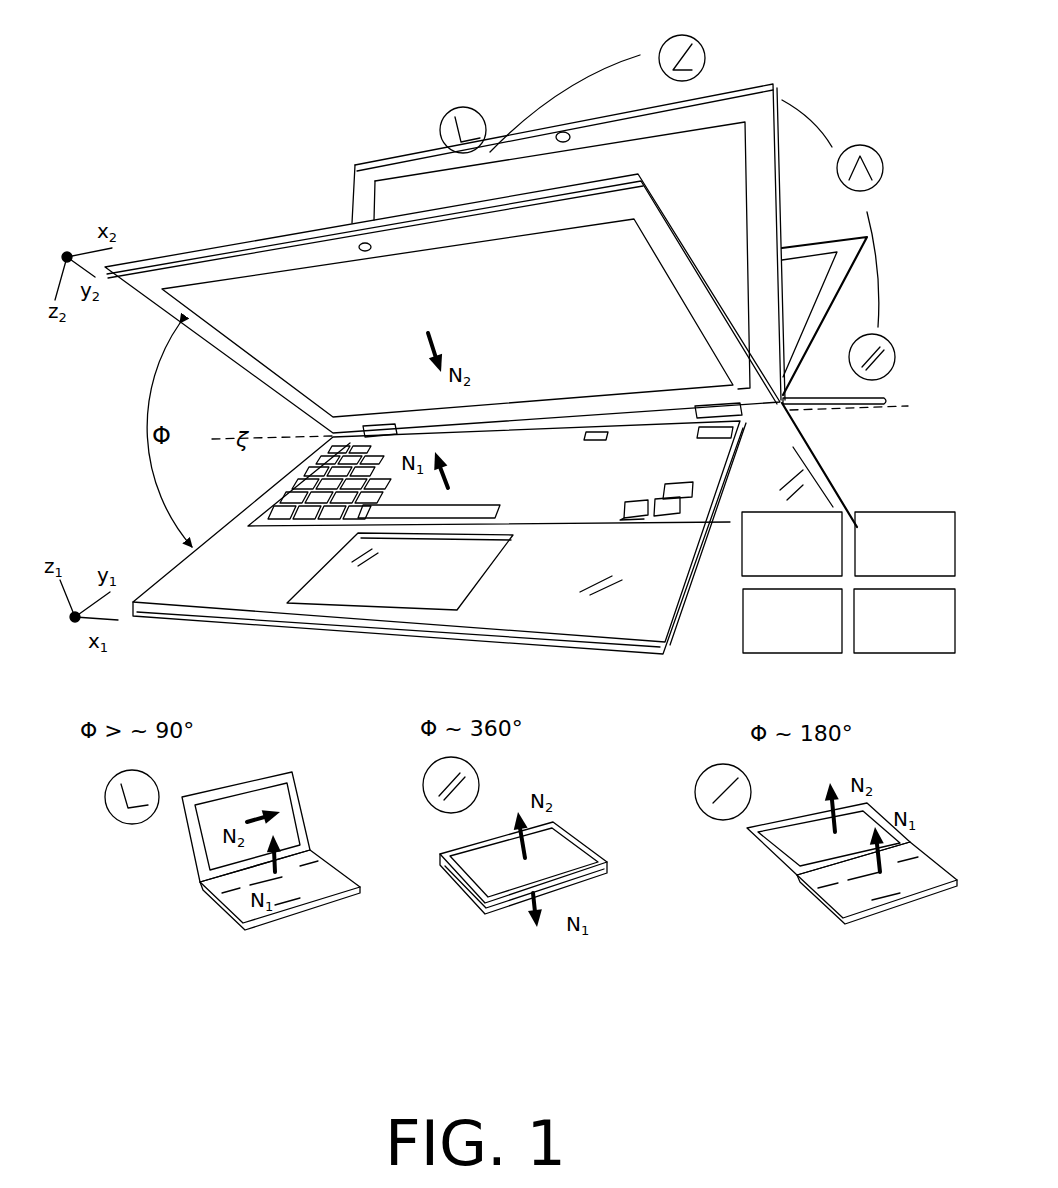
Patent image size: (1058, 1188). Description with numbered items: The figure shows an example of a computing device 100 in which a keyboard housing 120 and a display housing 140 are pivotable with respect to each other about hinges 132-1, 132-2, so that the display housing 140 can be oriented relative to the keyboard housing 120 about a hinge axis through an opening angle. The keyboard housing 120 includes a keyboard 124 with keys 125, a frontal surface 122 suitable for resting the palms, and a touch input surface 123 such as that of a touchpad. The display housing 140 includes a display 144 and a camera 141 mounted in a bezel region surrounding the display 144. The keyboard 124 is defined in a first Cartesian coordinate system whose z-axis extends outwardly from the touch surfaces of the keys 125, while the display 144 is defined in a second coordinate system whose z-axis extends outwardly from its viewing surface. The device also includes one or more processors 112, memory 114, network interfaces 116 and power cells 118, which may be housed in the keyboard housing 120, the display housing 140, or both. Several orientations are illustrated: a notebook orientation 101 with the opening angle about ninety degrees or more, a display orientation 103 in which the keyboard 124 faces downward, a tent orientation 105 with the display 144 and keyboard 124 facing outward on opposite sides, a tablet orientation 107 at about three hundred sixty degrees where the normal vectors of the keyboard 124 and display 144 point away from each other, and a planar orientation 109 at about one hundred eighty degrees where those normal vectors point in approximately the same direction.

The computing device 100 is at (276, 128).
The orientation 101 is at (441, 112).
The orientation 103 is at (661, 42).
The orientation 105 is at (880, 150).
The orientation 107 is at (884, 344).
The orientation 109 is at (698, 775).
The processors 112 is at (816, 567).
The memory 114 is at (926, 567).
The network interfaces 116 is at (816, 644).
The power cells 118 is at (926, 644).
The keyboard housing 120 is at (200, 622).
The frontal surface 122 is at (570, 580).
The touch input surface 123 is at (441, 584).
The keyboard 124 is at (650, 487).
The keys 125 is at (634, 520).
The hinge 132-1 is at (382, 424).
The hinge 132-2 is at (705, 406).
The display housing 140 is at (197, 245).
The camera 141 is at (363, 252).
The display 144 is at (586, 316).